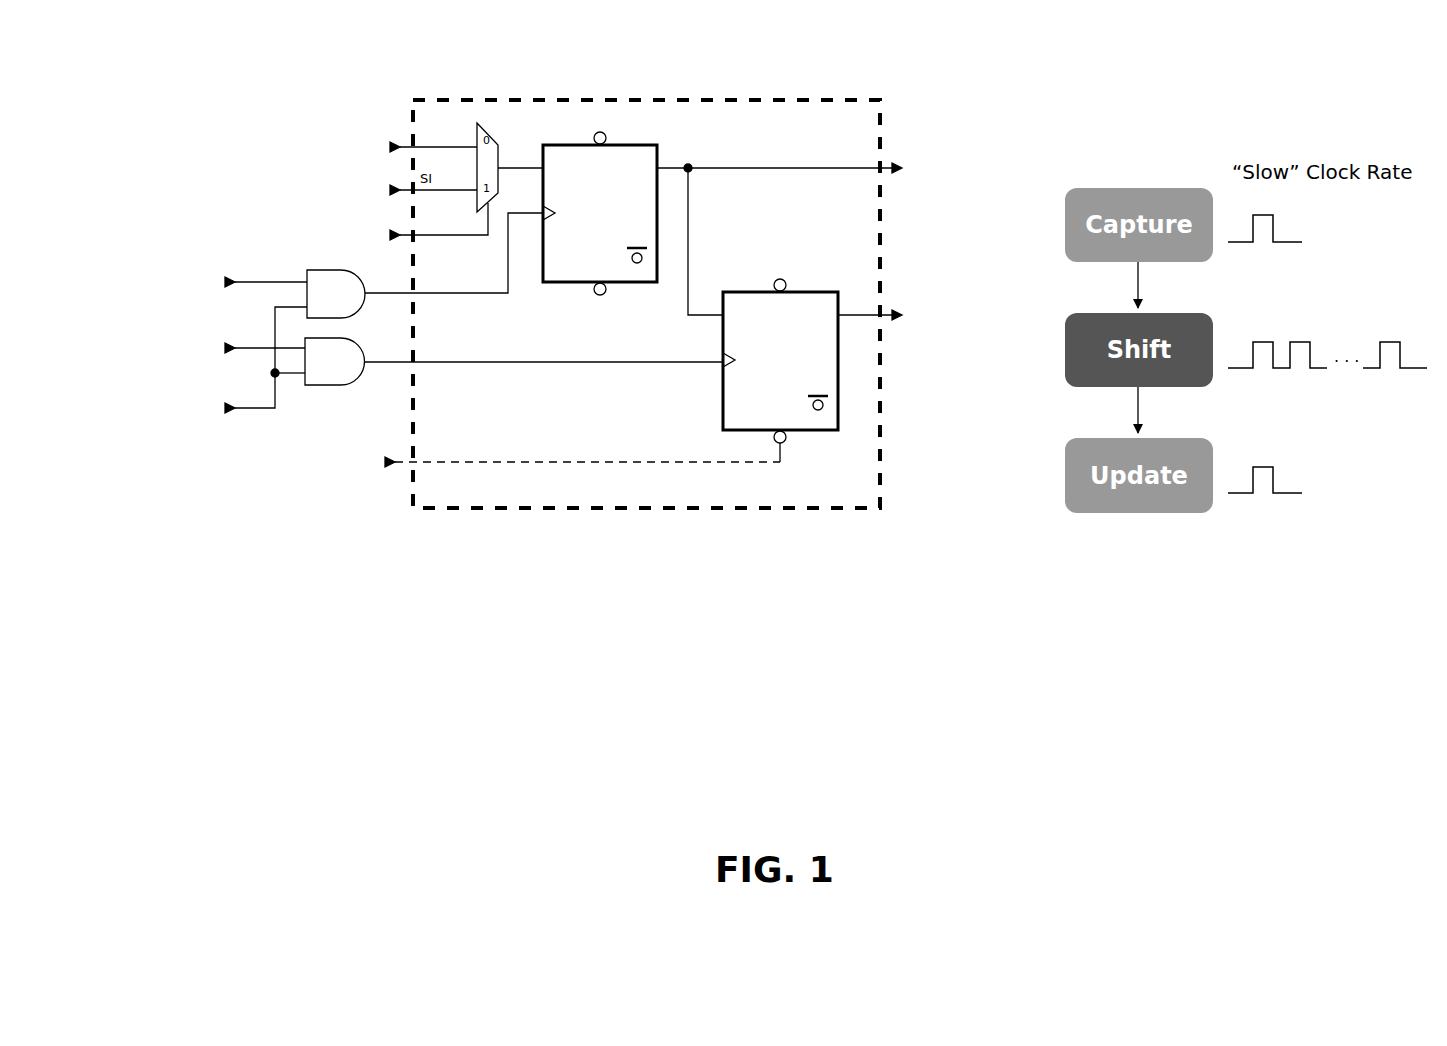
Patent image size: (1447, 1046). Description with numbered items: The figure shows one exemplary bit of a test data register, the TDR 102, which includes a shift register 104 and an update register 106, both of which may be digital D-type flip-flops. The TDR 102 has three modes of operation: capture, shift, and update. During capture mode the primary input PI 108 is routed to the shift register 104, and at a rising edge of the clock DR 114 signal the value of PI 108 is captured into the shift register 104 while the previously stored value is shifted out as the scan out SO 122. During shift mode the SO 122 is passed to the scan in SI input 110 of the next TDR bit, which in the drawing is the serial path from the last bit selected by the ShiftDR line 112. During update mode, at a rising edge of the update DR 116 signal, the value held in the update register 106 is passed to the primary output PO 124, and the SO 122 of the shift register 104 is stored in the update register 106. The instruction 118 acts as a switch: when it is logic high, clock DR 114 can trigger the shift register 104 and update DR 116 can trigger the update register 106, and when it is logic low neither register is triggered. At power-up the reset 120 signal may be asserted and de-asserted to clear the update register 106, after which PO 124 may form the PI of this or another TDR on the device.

The test data register (TDR) 102 is at (812, 100).
The shift register 104 is at (627, 145).
The update register 106 is at (838, 413).
The primary input (PI) 108 is at (400, 138).
The scan in (SI) input 110 is at (318, 173).
The ShiftDR signal 112 is at (296, 235).
The clock DR 114 is at (133, 300).
The update DR 116 is at (120, 370).
The instruction 118 is at (146, 430).
The reset 120 is at (506, 471).
The scan out (SO) 122 is at (922, 146).
The primary output (PO) 124 is at (917, 298).